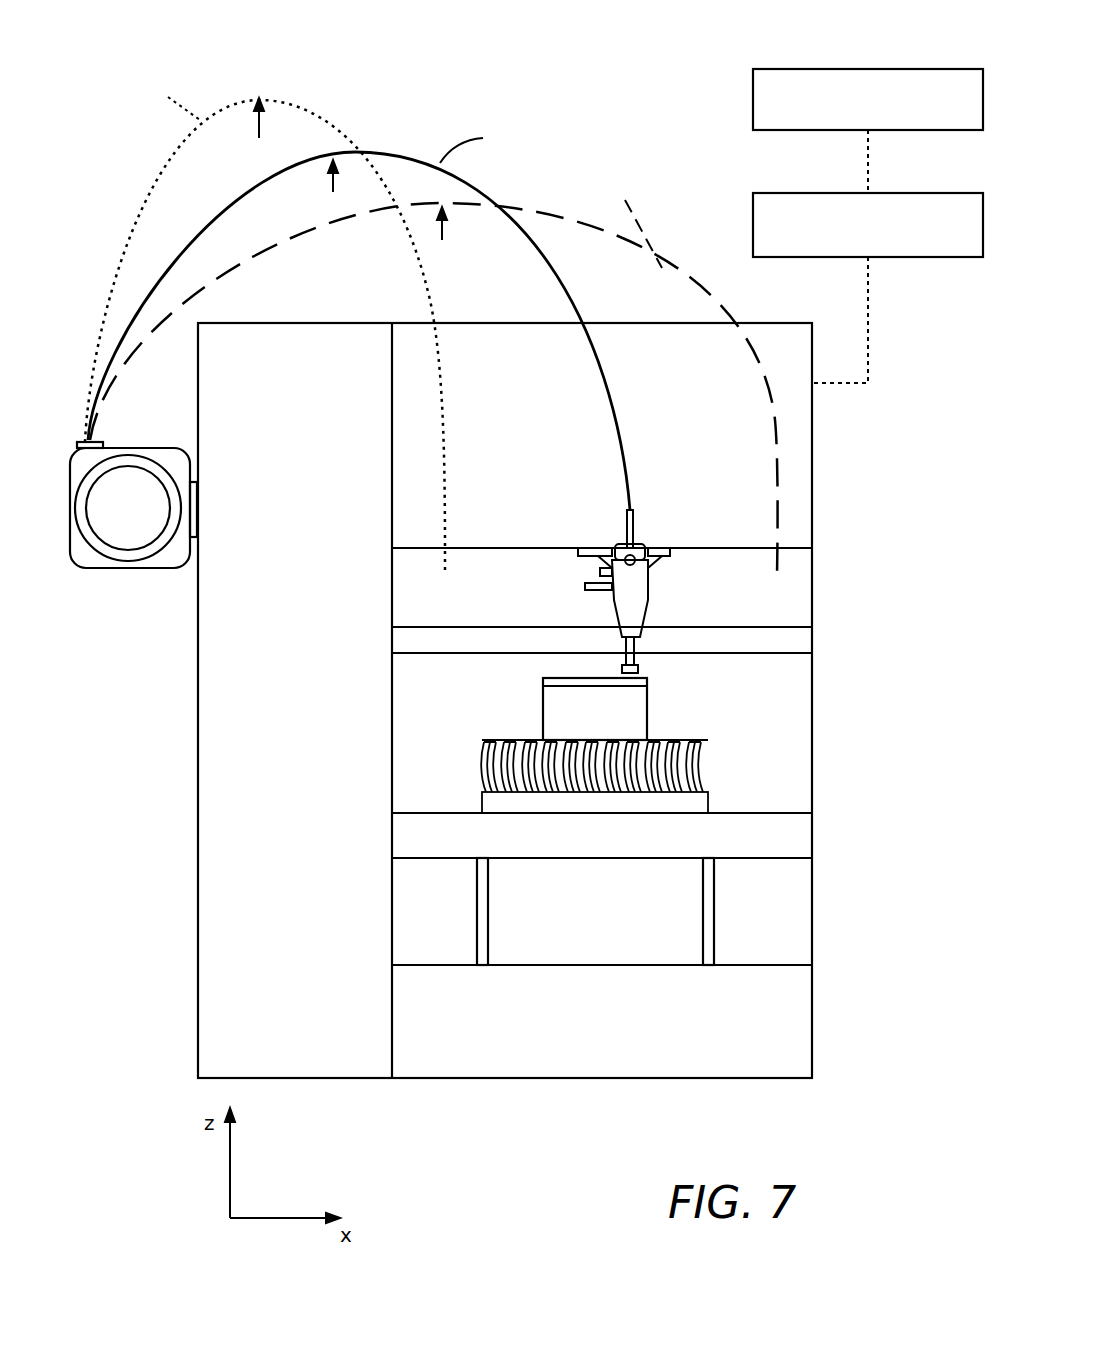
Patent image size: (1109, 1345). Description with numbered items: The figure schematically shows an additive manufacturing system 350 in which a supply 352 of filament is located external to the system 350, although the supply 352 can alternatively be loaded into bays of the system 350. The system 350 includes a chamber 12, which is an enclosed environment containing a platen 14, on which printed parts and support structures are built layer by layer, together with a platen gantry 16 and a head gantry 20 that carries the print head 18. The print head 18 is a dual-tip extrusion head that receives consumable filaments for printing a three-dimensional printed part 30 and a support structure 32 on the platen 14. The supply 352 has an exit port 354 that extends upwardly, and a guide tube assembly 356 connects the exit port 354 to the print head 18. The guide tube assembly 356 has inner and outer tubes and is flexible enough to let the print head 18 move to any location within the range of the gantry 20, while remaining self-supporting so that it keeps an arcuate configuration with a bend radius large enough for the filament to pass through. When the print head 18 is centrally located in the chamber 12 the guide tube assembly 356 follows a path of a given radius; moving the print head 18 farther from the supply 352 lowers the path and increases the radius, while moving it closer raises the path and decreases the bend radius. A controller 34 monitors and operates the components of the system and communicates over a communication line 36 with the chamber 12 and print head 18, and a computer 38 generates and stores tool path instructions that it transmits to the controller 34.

The chamber 12 is at (395, 760).
The platen 14 is at (806, 848).
The platen gantry 16 is at (728, 945).
The print head 18 is at (705, 605).
The head gantry 20 is at (458, 627).
The 3D part 30 is at (552, 720).
The support structure 32 is at (705, 800).
The controller 34 is at (753, 195).
The communication line 36 is at (868, 290).
The computer 38 is at (753, 90).
The additive manufacturing system 350 is at (421, 108).
The supply 352 is at (150, 520).
The exit port 354 is at (100, 440).
The guide tube assembly 356 is at (140, 270).